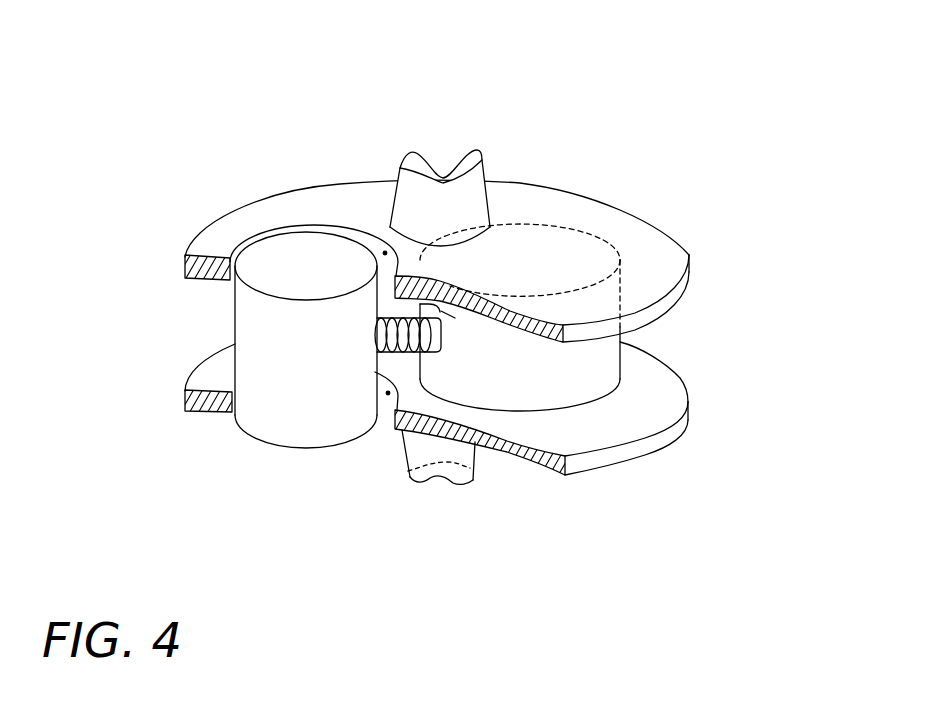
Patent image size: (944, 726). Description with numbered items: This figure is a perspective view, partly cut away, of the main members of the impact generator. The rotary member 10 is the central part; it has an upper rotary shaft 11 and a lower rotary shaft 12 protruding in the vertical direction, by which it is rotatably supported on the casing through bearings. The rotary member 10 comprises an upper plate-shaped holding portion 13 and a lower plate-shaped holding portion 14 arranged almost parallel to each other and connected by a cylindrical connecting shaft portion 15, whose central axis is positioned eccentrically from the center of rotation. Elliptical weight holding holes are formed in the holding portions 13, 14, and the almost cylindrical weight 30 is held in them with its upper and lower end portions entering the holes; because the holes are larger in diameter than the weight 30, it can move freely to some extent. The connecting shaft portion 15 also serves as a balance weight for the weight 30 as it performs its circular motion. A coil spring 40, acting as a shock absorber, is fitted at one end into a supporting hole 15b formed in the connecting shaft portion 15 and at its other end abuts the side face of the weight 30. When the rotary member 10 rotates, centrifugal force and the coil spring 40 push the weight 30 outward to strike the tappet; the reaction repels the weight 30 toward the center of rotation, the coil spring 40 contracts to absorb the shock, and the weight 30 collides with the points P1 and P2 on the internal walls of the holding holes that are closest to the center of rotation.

The rotary member 10 is at (712, 195).
The rotary shaft 11 is at (462, 208).
The rotary shaft 12 is at (463, 446).
The upper plate-shaped holding portion 13 is at (260, 220).
The lower plate-shaped holding portion 14 is at (210, 382).
The connecting shaft portion 15 is at (593, 355).
The supporting hole 15b is at (455, 318).
The weight 30 is at (263, 345).
The coil spring 40 is at (440, 340).
The point on internal wall of weight holding hole P1 is at (385, 253).
The point on internal wall of weight holding hole P2 is at (388, 393).